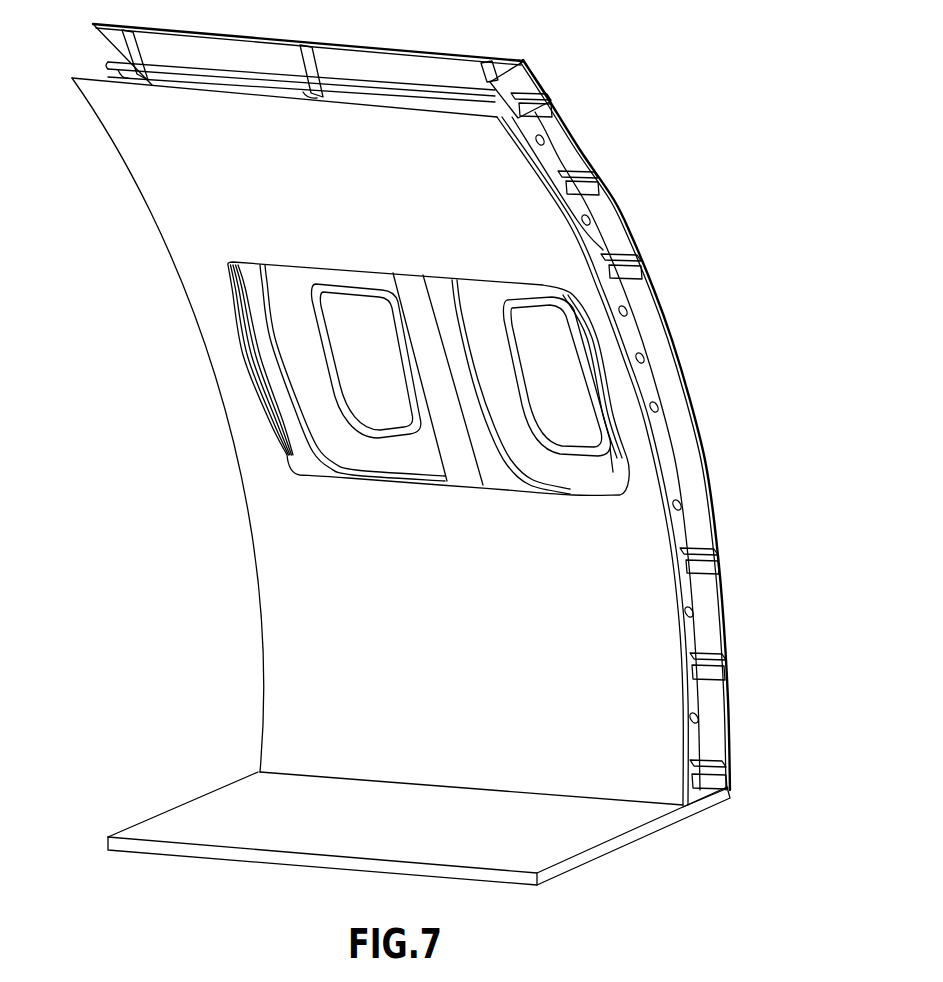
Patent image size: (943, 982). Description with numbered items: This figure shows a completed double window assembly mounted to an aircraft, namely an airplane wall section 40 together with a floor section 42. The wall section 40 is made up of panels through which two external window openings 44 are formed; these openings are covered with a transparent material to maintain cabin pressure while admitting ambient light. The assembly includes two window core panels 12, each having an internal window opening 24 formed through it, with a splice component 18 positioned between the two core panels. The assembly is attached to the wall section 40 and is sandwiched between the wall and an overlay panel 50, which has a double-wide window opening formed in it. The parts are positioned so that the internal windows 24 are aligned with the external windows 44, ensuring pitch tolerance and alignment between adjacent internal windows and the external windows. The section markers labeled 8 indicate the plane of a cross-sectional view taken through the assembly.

The section line for FIG. 8 is at (188, 367).
The window core panel 12 is at (303, 454).
The splice component 18 is at (413, 290).
The internal window opening 24 is at (352, 450).
The airplane wall section 40 is at (435, 65).
The floor section 42 is at (472, 838).
The external window opening 44 is at (347, 313).
The overlay panel 50 is at (480, 566).